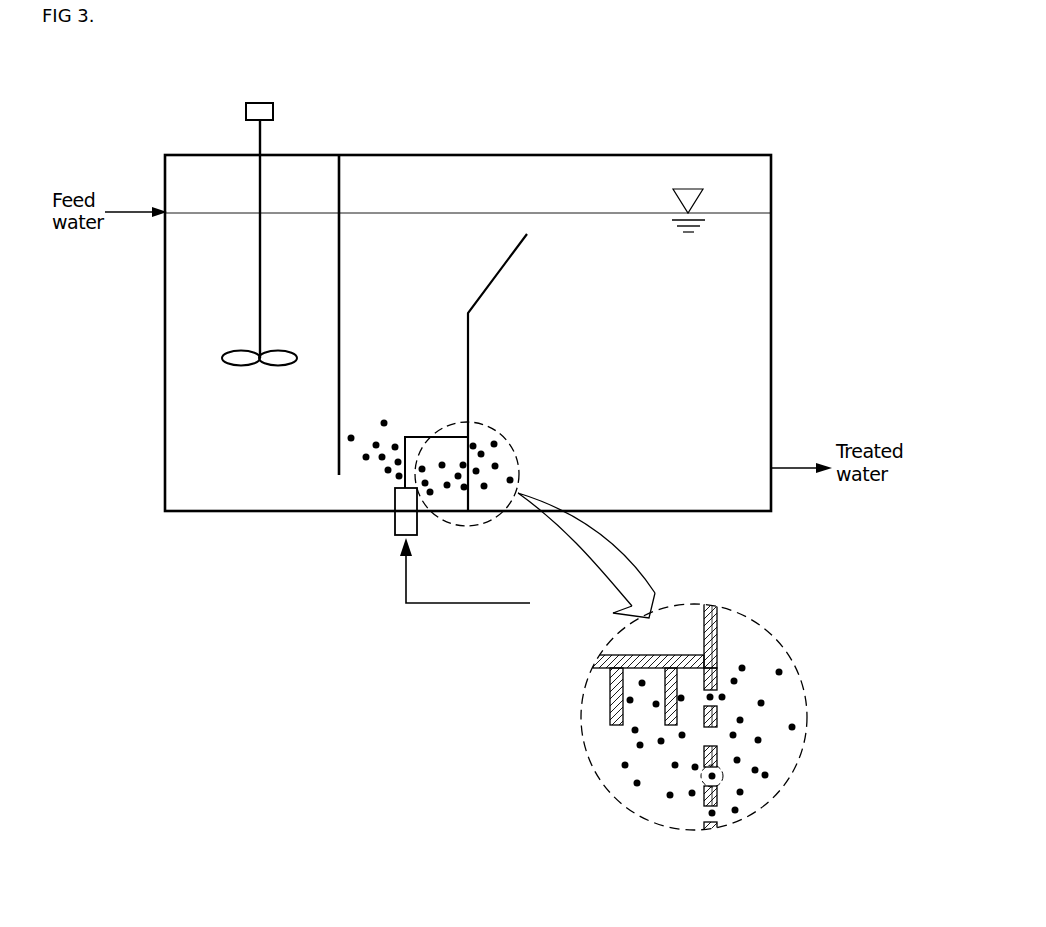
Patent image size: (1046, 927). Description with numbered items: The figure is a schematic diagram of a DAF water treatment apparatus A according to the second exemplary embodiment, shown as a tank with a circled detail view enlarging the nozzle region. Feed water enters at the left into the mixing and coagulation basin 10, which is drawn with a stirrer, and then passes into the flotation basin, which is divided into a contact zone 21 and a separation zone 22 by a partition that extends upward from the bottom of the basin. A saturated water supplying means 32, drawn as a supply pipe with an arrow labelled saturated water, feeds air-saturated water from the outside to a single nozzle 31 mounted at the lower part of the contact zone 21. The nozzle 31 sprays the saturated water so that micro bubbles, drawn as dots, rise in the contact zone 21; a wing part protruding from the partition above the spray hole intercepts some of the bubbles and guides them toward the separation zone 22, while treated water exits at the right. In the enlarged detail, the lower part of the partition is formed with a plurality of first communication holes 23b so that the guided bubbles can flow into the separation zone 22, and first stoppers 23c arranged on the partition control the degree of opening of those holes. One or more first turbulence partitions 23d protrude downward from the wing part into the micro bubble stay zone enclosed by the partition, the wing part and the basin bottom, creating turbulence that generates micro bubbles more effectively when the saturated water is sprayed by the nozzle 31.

The mixing and coagulation basin 10 is at (307, 261).
The contact zone 21 is at (427, 285).
The separation zone 22 is at (580, 285).
The first communication holes 23b is at (723, 777).
The first stoppers 23c is at (720, 711).
The first turbulence partitions 23d is at (612, 700).
The nozzle 31 is at (396, 530).
The saturated water supplying means 32 is at (406, 603).
The DAF water treatment apparatus A is at (718, 88).